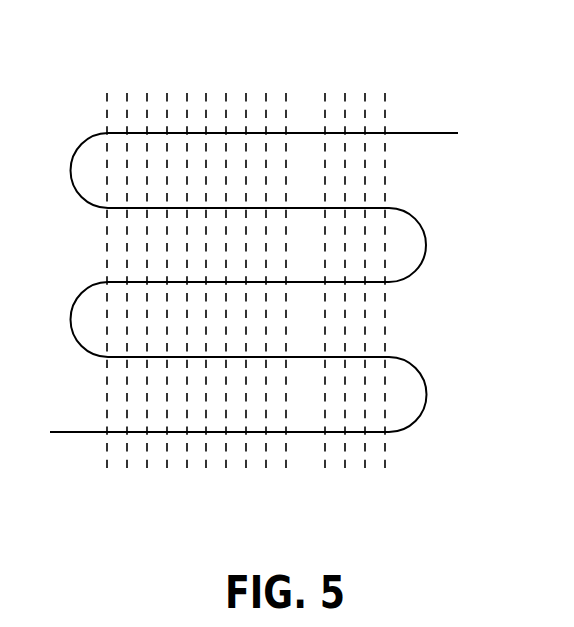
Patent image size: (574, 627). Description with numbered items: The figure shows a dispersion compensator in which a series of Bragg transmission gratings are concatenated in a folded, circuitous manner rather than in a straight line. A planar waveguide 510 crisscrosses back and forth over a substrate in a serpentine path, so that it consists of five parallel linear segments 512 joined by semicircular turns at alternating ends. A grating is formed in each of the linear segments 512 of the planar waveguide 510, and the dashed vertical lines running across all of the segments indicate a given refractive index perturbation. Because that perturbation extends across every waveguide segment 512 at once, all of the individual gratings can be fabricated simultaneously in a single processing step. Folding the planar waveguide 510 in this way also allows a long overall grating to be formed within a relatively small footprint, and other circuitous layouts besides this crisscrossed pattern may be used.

The planar waveguide 510 is at (423, 130).
The linear waveguide segments 512 is at (278, 281).